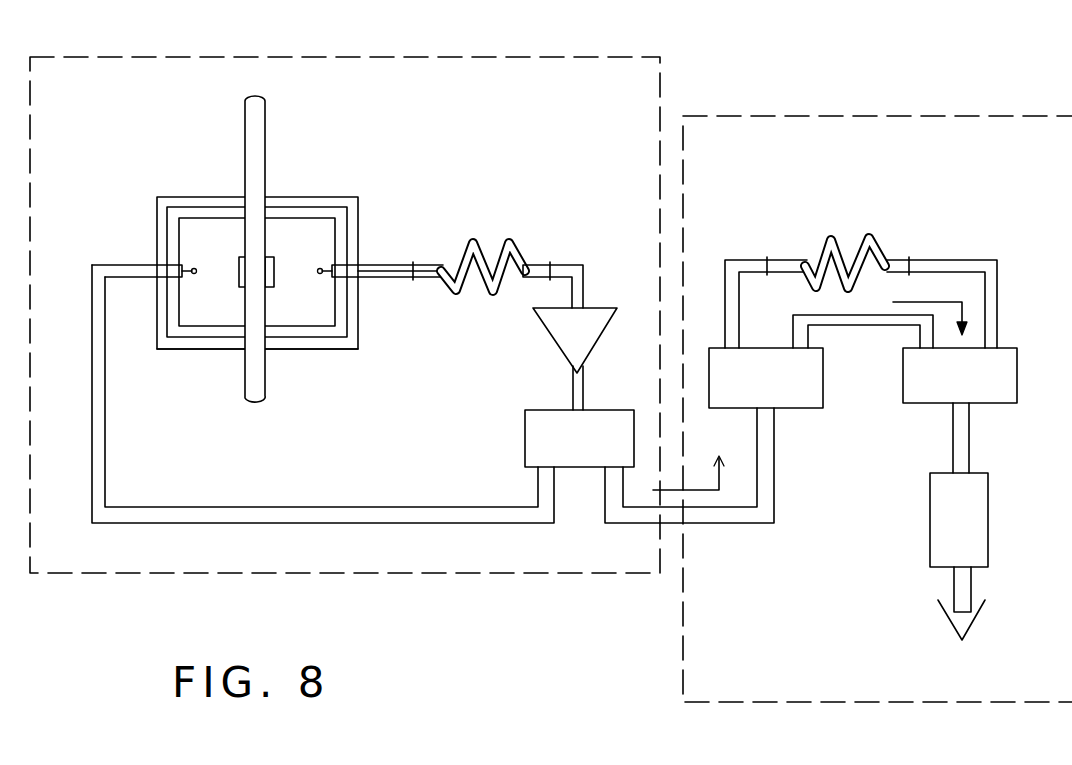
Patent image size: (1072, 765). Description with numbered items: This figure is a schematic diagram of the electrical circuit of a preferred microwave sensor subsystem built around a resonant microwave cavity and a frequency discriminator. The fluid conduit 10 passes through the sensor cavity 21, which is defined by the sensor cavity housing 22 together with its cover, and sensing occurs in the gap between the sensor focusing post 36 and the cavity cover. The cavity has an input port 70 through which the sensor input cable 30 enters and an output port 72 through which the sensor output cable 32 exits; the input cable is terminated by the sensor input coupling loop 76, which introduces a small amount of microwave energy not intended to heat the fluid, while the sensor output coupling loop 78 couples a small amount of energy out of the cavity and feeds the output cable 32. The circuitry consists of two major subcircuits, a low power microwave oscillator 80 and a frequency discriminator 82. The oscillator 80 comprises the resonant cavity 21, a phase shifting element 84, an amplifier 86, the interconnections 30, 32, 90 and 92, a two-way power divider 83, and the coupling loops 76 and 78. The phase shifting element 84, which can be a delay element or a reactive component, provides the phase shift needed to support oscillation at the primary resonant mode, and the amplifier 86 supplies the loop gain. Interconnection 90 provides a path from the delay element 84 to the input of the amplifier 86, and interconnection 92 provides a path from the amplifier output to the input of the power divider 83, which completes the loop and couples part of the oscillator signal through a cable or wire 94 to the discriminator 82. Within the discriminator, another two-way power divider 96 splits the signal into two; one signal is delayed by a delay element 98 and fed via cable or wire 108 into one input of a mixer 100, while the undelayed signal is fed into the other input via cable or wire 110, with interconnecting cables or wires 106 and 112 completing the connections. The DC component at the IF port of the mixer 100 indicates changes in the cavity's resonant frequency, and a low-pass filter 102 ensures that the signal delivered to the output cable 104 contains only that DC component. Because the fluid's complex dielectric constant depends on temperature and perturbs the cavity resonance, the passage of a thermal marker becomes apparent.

The fluid conduit 10 is at (266, 125).
The sensor cavity 21 is at (205, 298).
The sensor cavity housing 22 is at (205, 349).
The sensor input cable 30 is at (305, 507).
The sensor output cable 32 is at (393, 278).
The sensor focusing post 36 is at (276, 282).
The input port 70 is at (162, 265).
The output port 72 is at (352, 262).
The sensor input coupling loop 76 is at (196, 268).
The sensor output coupling loop 78 is at (318, 268).
The low power microwave oscillator 80 is at (668, 76).
The frequency discriminator 82 is at (990, 112).
The two-way power divider 83 is at (525, 455).
The phase shifting element 84 is at (505, 241).
The amplifier 86 is at (561, 344).
The interconnection 90 is at (585, 283).
The interconnection 92 is at (585, 391).
The cable or wire 94 is at (718, 526).
The two-way power divider 96 is at (823, 378).
The delay element 98 is at (836, 238).
The mixer 100 is at (903, 392).
The low-pass filter 102 is at (988, 510).
The output cable 104 is at (955, 592).
The interconnecting cable or wire 106 is at (745, 262).
The interconnecting cable or wire 108 is at (960, 262).
The interconnecting cable or wire 110 is at (822, 315).
The interconnecting cable or wire 112 is at (970, 436).